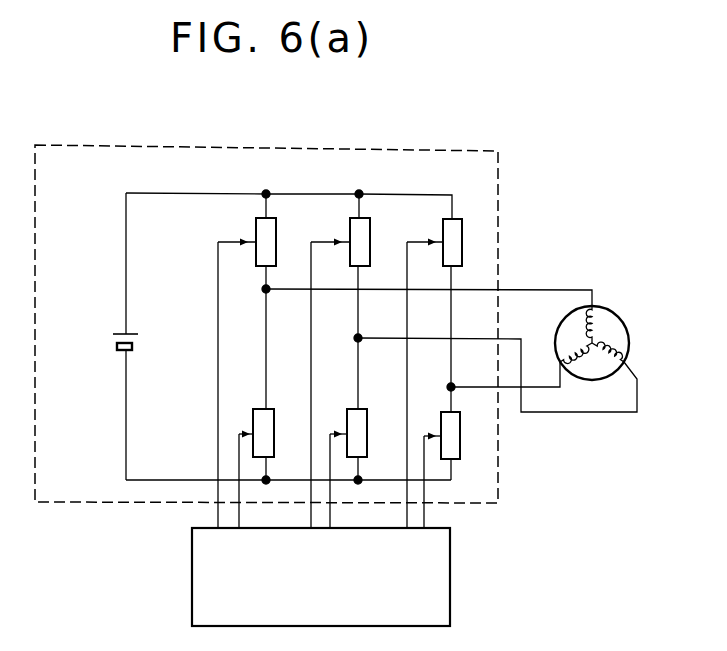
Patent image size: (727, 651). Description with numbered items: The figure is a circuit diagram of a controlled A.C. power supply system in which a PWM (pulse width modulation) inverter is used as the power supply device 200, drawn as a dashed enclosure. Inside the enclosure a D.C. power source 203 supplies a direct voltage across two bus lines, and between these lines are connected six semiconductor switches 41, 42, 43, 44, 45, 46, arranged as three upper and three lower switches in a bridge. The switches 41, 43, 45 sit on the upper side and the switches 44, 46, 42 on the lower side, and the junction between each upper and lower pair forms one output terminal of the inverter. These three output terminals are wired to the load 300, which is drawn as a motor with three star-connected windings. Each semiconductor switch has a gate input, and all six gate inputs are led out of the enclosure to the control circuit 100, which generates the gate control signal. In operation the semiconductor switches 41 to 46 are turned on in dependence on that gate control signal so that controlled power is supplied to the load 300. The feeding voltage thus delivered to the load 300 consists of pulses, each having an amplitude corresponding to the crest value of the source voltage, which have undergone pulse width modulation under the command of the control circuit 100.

The power supply device 200 is at (499, 181).
The D.C. power source 203 is at (134, 342).
The semiconductor switch 41 is at (277, 242).
The semiconductor switch 42 is at (460, 440).
The semiconductor switch 43 is at (371, 242).
The semiconductor switch 44 is at (275, 428).
The semiconductor switch 45 is at (463, 243).
The semiconductor switch 46 is at (368, 426).
The load 300 is at (619, 318).
The control circuit 100 is at (451, 584).